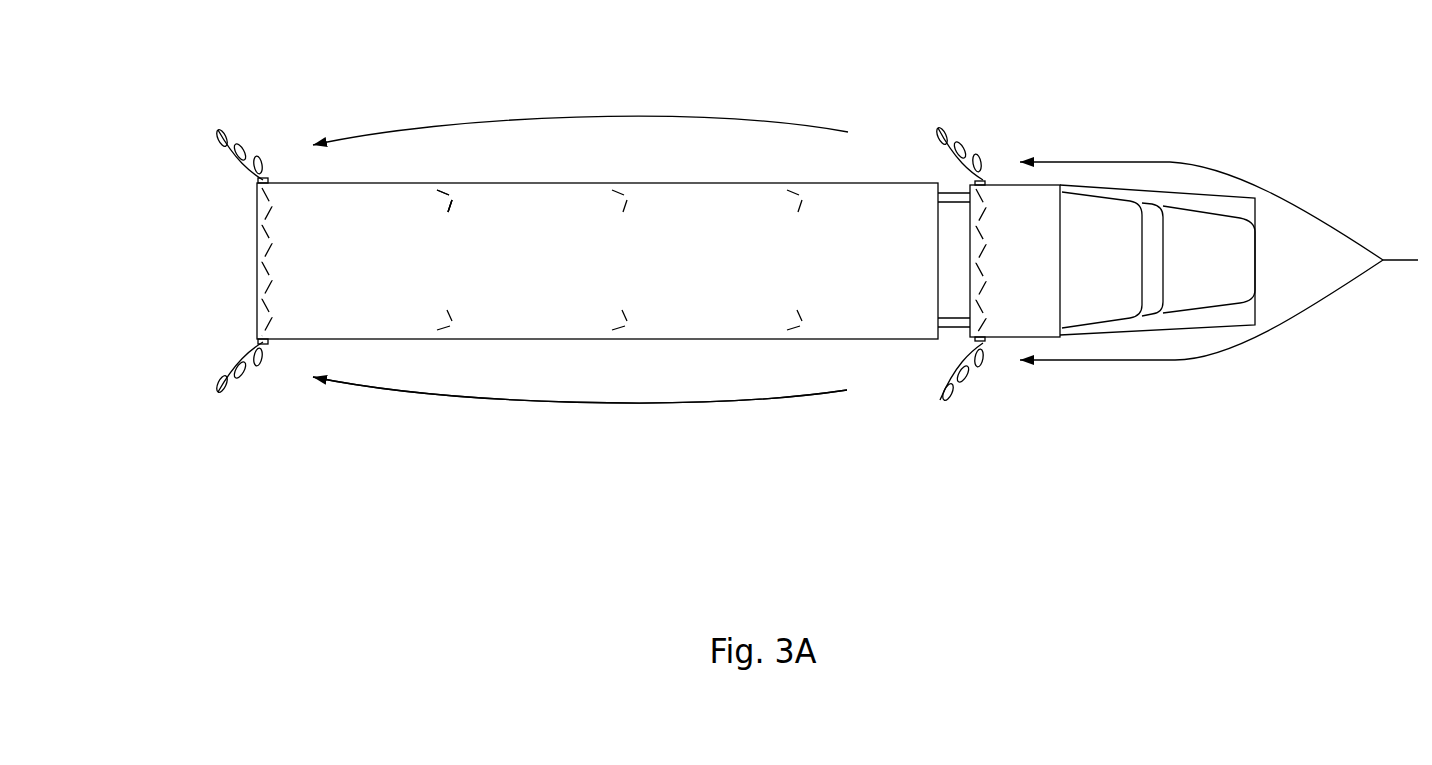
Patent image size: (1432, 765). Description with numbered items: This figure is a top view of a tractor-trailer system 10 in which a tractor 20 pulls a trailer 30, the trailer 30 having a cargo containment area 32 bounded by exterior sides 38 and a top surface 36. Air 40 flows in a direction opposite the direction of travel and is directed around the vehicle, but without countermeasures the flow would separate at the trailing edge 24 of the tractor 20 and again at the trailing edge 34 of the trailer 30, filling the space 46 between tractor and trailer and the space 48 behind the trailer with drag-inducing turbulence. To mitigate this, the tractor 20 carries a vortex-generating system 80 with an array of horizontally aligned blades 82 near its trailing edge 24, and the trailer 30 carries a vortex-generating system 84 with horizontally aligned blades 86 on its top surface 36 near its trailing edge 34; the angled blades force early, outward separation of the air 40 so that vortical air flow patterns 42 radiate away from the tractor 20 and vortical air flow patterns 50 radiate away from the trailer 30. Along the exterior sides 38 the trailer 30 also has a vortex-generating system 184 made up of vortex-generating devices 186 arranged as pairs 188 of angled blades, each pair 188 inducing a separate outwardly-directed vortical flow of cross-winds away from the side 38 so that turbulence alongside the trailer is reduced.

The tractor-trailer system 10 is at (1072, 140).
The tractor 20 is at (1107, 338).
The trailing edge 24 is at (965, 328).
The trailer 30 is at (684, 180).
The cargo containment area 32 is at (388, 183).
The trailing edge 34 is at (257, 217).
The top surface 36 is at (625, 262).
The exterior side 38 is at (580, 183).
The air 40 is at (1228, 170).
The vortical air flow pattern 42 is at (968, 128).
The space 46 is at (955, 293).
The space 48 is at (243, 300).
The vortical air flow pattern 50 is at (269, 128).
The vortex-generating system 80 is at (992, 232).
The horizontally aligned blades 82 is at (982, 283).
The vortex-generating system 84 is at (278, 232).
The horizontally aligned blades 86 is at (268, 310).
The vortex-generating system 184 is at (447, 215).
The vortex-generating devices 186 is at (448, 203).
The pair of blades 188 is at (458, 195).